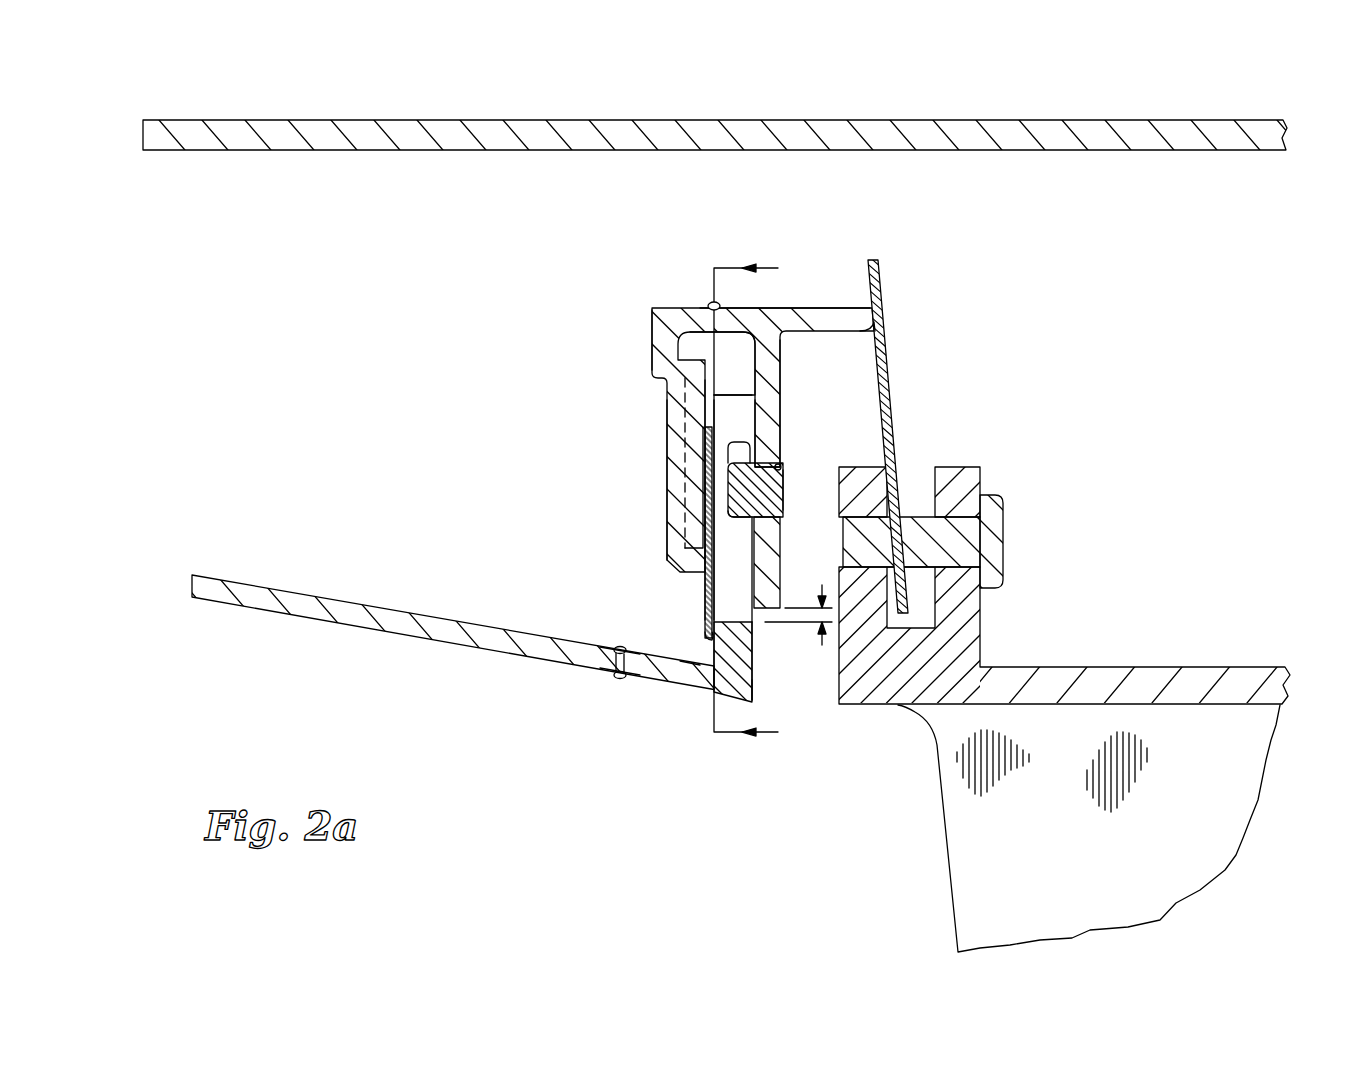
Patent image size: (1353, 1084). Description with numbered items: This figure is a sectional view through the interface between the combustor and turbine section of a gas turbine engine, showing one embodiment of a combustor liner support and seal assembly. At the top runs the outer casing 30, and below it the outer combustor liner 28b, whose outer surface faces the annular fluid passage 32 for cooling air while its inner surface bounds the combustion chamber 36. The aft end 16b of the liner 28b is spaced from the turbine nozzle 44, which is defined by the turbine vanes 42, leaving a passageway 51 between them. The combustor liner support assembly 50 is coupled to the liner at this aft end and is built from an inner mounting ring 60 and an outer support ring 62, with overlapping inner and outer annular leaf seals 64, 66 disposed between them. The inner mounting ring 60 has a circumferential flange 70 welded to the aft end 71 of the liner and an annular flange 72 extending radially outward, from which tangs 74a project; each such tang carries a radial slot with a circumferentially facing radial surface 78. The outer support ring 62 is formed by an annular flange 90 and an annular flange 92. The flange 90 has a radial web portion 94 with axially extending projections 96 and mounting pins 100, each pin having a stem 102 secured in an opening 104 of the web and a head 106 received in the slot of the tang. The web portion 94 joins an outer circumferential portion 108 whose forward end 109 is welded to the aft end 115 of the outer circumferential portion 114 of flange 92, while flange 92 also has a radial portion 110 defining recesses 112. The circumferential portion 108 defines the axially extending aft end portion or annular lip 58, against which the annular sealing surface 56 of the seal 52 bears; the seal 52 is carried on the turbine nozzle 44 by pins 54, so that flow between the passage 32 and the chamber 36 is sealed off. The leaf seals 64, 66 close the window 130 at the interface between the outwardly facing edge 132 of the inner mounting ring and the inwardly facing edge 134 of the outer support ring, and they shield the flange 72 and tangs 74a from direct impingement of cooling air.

The outer casing 30 is at (372, 154).
The outer combustor liner 28b is at (378, 596).
The circumferential flange 70 is at (667, 684).
The aft end 16b is at (676, 702).
The aft end of outer liner 71 is at (618, 678).
The annular combustion chamber 36 is at (480, 737).
The annular fluid passage 32 is at (430, 406).
The outer support ring 62 is at (647, 466).
The combustor liner support assembly 50 is at (588, 566).
The annular flange 92 is at (663, 432).
The radial portion 110 is at (698, 397).
The recesses 112 is at (660, 414).
The outer circumferential portion 114 is at (668, 306).
The outer circumferential portion 108 is at (808, 306).
The annular lip 58 is at (867, 328).
The projections 96 is at (720, 392).
The web portion 94 is at (785, 392).
The forward end 109 is at (703, 306).
The aft end 115 is at (722, 318).
The stem 102 is at (788, 482).
The mounting pin 100 is at (792, 490).
The opening 104 is at (780, 464).
The head 106 is at (728, 518).
The tang 74a is at (784, 562).
The inner annular leaf seal 64 is at (706, 616).
The outer annular leaf seal 66 is at (705, 590).
The outwardly facing edge 132 is at (706, 636).
The radial surface 78 is at (729, 510).
The annular flange 72 is at (753, 678).
The inner mounting ring 60 is at (797, 705).
The passageway 51 is at (764, 690).
The inwardly facing edge 134 is at (798, 632).
The window 130 is at (820, 631).
The annular flange 90 is at (852, 516).
The pin 54 is at (1006, 530).
The turbine nozzle 44 is at (1198, 662).
The seal 52 is at (887, 328).
The annular sealing surface 56 is at (893, 332).
The turbine vane 42 is at (1252, 783).